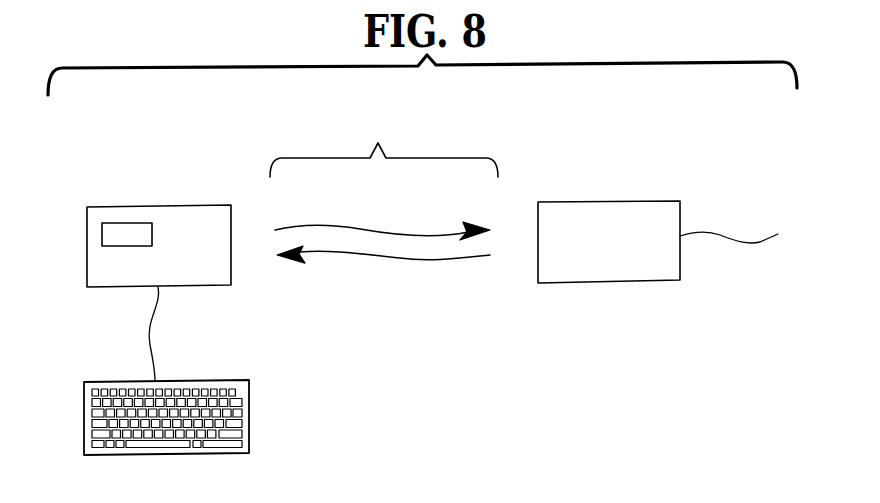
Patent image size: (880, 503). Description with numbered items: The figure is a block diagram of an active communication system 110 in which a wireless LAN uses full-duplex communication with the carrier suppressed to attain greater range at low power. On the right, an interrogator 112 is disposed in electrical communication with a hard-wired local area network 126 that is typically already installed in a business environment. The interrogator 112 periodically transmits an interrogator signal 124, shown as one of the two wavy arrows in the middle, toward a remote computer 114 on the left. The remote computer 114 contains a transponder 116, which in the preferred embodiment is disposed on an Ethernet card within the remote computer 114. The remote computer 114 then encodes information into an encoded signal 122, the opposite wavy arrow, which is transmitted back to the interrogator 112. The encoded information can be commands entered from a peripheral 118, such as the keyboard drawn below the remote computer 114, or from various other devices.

The communication system 110 is at (384, 144).
The interrogator 112 is at (617, 202).
The remote computer 114 is at (200, 287).
The transponder 116 is at (120, 223).
The peripheral 118 is at (250, 415).
The encoded signal 122 is at (366, 228).
The interrogator signal 124 is at (378, 257).
The local area network 126 is at (756, 243).